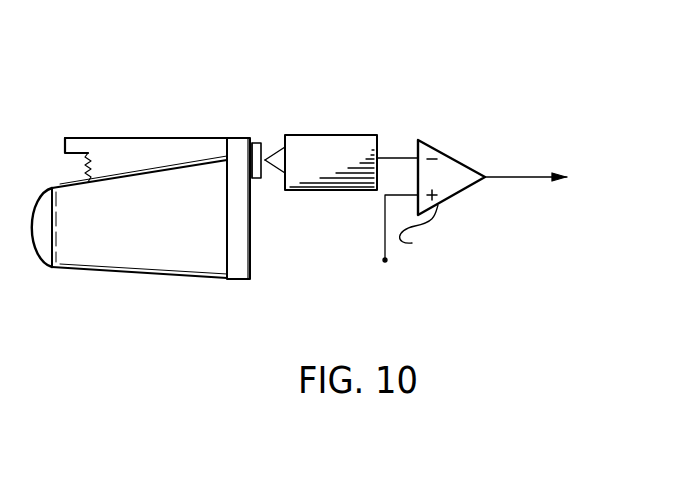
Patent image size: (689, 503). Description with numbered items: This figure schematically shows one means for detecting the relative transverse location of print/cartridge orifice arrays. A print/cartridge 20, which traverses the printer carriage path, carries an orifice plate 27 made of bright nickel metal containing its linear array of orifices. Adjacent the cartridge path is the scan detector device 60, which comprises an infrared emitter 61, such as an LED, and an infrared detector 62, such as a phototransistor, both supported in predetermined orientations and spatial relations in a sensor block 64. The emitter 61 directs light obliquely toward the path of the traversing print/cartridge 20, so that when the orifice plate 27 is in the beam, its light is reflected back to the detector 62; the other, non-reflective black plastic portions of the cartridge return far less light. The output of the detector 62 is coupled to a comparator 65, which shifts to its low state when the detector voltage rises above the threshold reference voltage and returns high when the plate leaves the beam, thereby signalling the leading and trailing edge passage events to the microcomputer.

The print/cartridge 20 is at (160, 258).
The orifice plate 27 is at (262, 146).
The scan detector device 60 is at (330, 140).
The infrared emitter 61 is at (284, 147).
The infrared detector 62 is at (284, 174).
The sensor block 64 is at (363, 135).
The comparator 65 is at (451, 156).